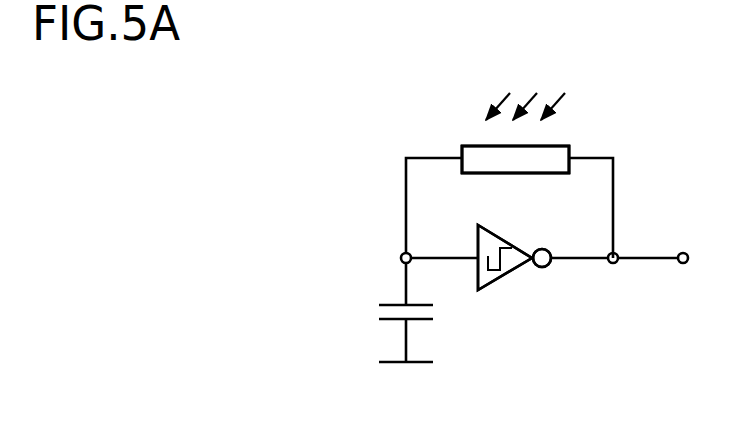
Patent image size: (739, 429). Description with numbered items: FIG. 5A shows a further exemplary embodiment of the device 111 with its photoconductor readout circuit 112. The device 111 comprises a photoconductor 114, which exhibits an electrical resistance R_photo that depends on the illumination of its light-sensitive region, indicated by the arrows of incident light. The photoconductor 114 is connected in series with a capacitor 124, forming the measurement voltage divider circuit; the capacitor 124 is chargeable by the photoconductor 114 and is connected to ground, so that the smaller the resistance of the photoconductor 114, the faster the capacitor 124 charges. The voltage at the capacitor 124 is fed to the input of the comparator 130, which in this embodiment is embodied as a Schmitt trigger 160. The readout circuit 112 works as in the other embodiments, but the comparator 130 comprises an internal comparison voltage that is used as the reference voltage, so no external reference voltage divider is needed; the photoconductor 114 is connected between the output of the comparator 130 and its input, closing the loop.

The device 111 is at (440, 87).
The photoconductor readout circuit 112 is at (440, 87).
The photoconductor 114 is at (462, 146).
The capacitor 124 is at (362, 327).
The comparator 130 is at (507, 274).
The Schmitt trigger 160 is at (571, 351).